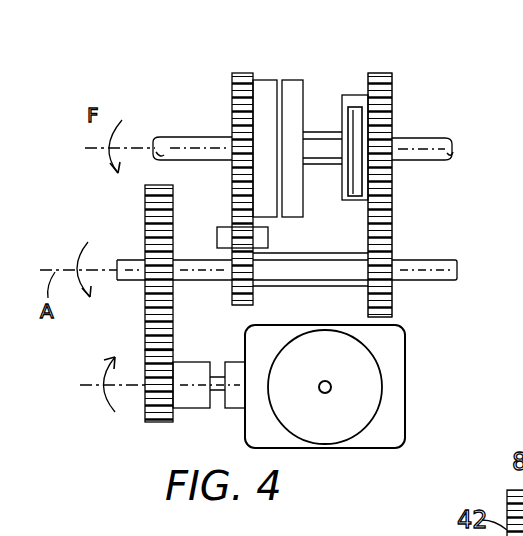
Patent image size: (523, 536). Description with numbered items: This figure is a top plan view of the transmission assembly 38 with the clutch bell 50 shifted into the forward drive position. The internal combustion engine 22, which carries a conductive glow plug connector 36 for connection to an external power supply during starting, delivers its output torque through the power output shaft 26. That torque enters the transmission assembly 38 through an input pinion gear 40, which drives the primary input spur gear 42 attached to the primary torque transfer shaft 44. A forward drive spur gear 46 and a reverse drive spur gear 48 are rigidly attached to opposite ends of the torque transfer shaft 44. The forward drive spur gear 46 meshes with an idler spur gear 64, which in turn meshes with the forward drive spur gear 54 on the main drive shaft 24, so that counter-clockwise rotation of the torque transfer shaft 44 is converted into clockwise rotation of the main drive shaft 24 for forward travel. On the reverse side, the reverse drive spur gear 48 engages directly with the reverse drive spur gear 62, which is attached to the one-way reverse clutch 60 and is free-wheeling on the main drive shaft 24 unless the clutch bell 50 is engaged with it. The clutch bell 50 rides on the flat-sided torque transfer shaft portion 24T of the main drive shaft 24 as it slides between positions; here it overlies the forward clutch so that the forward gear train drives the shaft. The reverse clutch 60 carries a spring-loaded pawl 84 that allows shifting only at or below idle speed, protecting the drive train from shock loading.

The transmission assembly 38 is at (165, 68).
The main drive shaft 24 is at (187, 137).
The torque transfer shaft portion 24T is at (325, 130).
The forward drive spur gear 54 is at (232, 100).
The clutch bell 50 is at (270, 80).
The reverse clutch 60 is at (352, 95).
The spring-loaded pawl 84 is at (355, 172).
The reverse drive spur gear 62 is at (392, 90).
The reverse drive spur gear 48 is at (392, 243).
The idler spur gear 64 is at (231, 222).
The primary input spur gear 42 is at (145, 228).
The input pinion gear 40 is at (145, 398).
The primary torque transfer shaft 44 is at (420, 283).
The forward drive spur gear 46 is at (253, 295).
The power output shaft 26 is at (217, 393).
The engine 22 is at (405, 417).
The conductive glow plug connector 36 is at (333, 383).